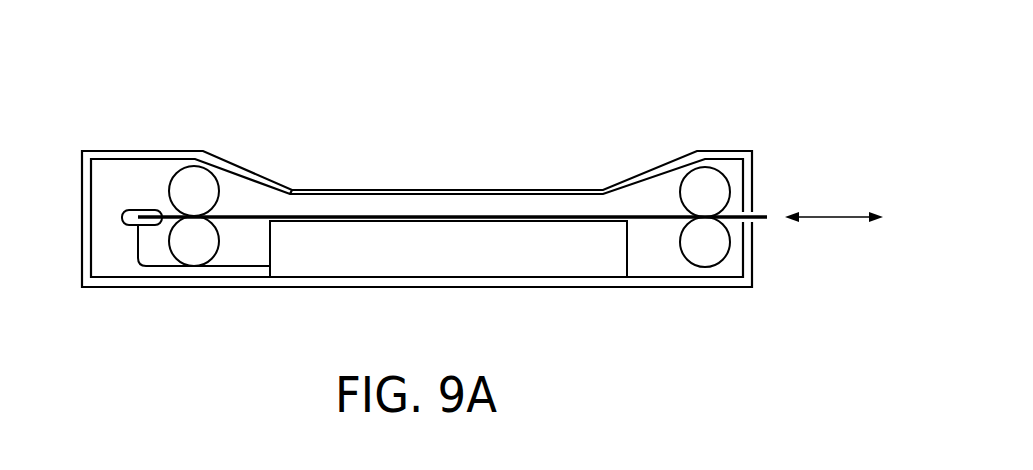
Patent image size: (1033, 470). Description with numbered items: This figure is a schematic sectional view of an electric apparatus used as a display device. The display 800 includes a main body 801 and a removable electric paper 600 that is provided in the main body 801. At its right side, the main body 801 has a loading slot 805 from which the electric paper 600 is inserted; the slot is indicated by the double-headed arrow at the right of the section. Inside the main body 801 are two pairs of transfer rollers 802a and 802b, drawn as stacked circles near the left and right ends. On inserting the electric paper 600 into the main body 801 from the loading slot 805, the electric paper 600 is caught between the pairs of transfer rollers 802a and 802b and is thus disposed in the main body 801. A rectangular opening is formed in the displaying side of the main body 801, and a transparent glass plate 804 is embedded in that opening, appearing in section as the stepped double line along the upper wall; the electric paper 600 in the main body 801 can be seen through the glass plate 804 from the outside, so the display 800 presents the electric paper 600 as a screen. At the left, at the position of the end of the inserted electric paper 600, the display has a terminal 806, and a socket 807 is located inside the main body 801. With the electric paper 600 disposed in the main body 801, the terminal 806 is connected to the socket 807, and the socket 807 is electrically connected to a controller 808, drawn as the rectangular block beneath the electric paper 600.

The display 800 is at (748, 89).
The main body 801 is at (158, 152).
The transfer rollers 802a is at (226, 167).
The transfer rollers 802b is at (707, 158).
The electric paper 600 is at (435, 208).
The transparent glass plate 804 is at (527, 191).
The loading slot 805 is at (760, 215).
The terminal 806 is at (141, 210).
The socket 807 is at (130, 226).
The controller 808 is at (417, 263).